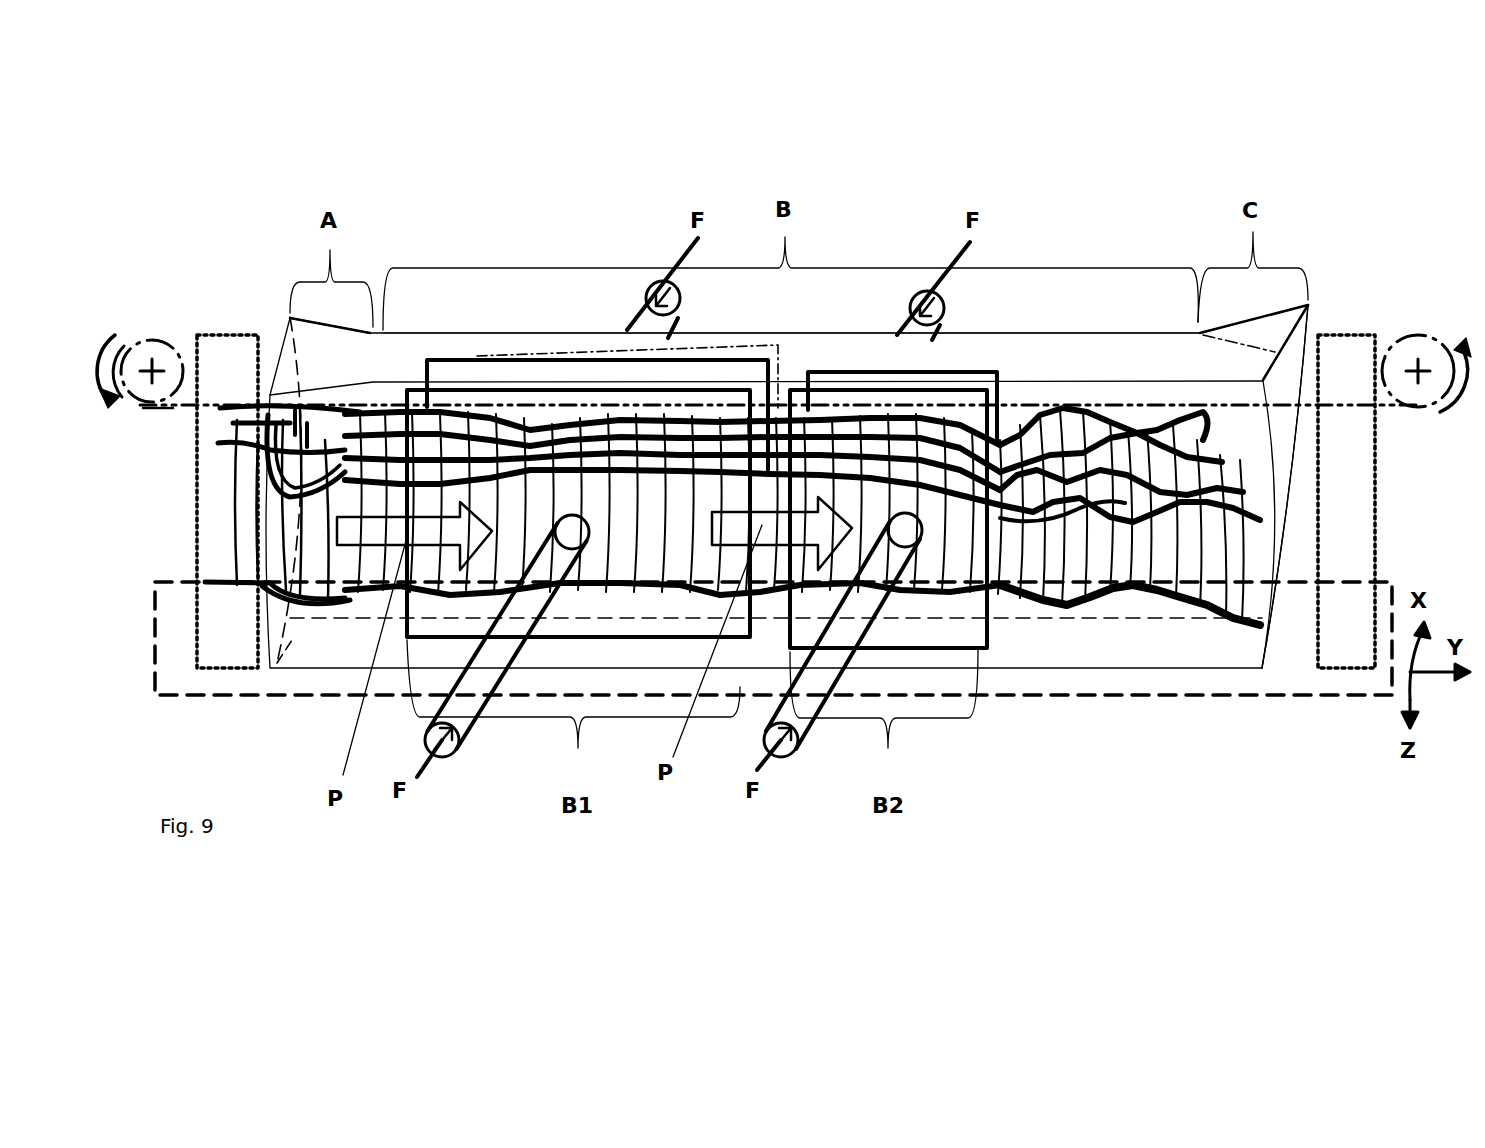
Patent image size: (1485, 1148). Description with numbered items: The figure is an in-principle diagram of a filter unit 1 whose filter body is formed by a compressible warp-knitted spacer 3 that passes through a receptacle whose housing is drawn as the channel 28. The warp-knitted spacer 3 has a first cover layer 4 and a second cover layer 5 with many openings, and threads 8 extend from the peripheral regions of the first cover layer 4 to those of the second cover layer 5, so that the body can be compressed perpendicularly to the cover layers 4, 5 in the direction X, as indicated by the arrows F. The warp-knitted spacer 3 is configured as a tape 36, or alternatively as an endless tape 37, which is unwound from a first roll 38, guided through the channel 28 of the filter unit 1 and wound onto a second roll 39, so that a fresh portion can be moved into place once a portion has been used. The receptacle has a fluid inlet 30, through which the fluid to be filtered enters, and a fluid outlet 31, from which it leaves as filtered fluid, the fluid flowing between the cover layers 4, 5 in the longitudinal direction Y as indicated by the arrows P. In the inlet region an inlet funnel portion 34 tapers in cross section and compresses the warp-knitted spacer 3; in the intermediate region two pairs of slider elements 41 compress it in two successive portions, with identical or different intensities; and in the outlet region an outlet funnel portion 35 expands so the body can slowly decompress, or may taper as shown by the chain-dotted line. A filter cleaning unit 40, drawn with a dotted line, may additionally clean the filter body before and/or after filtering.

The filter unit 1 is at (1105, 253).
The warp-knitted spacer 3 is at (1140, 417).
The first cover layer 4 is at (1077, 605).
The second cover layer 5 is at (1065, 410).
The threads 8 is at (1095, 565).
The channel housing 28 is at (545, 330).
The fluid inlet 30 is at (280, 343).
The fluid outlet 31 is at (1308, 323).
The inlet funnel portion 34 is at (330, 323).
The outlet funnel portion 35 is at (1260, 317).
The tape 36 is at (167, 410).
The endless tape 37 is at (177, 580).
The first roll 38 is at (160, 333).
The second roll 39 is at (1422, 348).
The filter cleaning unit 40 is at (225, 350).
The slider elements 41 is at (467, 357).